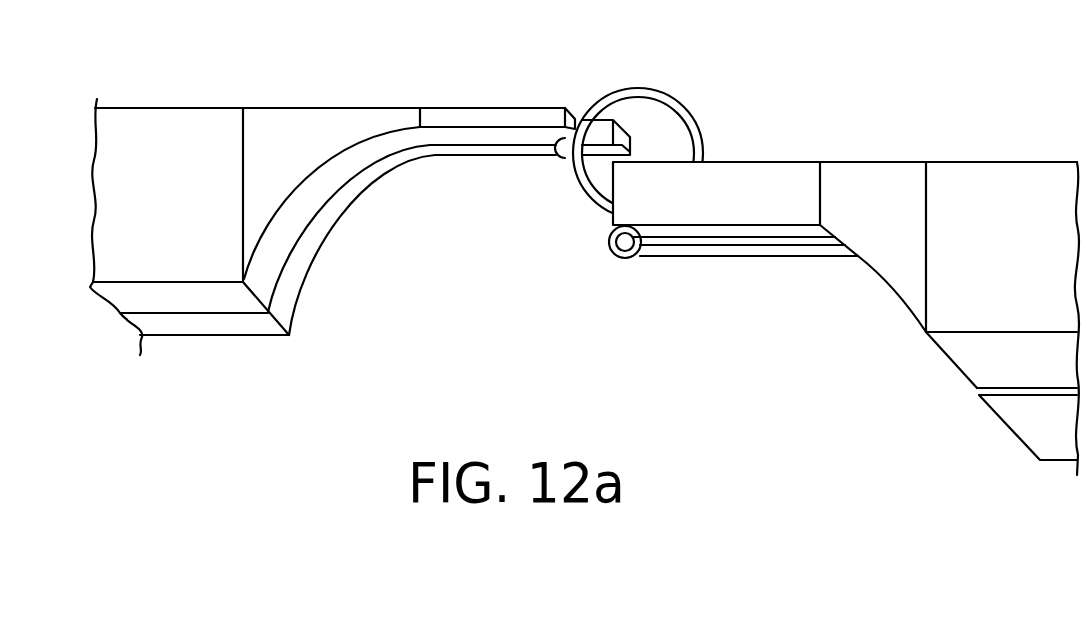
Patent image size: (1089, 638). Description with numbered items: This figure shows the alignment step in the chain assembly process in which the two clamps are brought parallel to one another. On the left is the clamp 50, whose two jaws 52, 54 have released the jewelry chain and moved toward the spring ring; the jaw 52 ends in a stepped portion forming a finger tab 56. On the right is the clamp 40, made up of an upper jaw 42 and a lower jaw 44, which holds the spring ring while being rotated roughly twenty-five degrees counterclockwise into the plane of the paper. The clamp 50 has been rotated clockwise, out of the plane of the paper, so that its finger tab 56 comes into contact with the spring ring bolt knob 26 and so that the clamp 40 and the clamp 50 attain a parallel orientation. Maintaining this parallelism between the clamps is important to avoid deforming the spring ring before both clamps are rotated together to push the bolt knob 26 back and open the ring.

The clamp 50 is at (332, 189).
The jaw 52 is at (190, 212).
The jaw 54 is at (218, 325).
The finger tab 56 is at (488, 137).
The spring ring bolt knob 26 is at (557, 157).
The clamp 40 is at (826, 280).
The upper jaw 42 is at (1014, 262).
The lower jaw 44 is at (1055, 422).